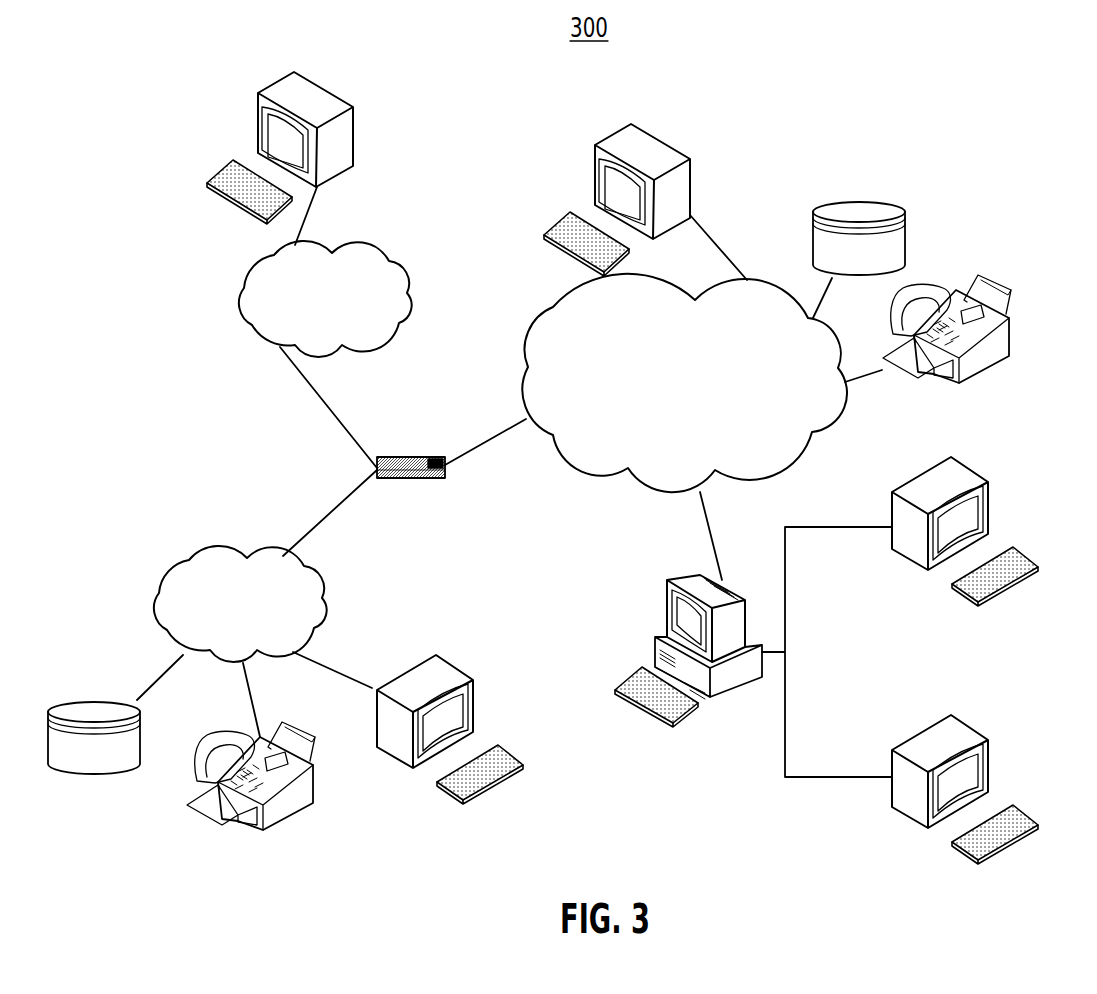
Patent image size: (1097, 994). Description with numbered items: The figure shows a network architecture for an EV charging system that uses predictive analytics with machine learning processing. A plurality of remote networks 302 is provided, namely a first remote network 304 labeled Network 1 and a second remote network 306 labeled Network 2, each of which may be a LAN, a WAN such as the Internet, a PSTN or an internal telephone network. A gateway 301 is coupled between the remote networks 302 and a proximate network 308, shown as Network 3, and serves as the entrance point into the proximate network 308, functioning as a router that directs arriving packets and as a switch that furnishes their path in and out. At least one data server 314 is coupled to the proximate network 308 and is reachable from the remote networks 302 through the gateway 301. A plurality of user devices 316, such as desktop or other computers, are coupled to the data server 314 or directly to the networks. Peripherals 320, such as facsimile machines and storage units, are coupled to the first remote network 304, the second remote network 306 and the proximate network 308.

The gateway 301 is at (411, 455).
The remote networks 302 is at (227, 378).
The first remote network 304 is at (155, 580).
The second remote network 306 is at (412, 305).
The proximate network 308 is at (815, 453).
The data server 314 is at (660, 606).
The user devices 316 is at (357, 138).
The peripheral 320 is at (858, 200).